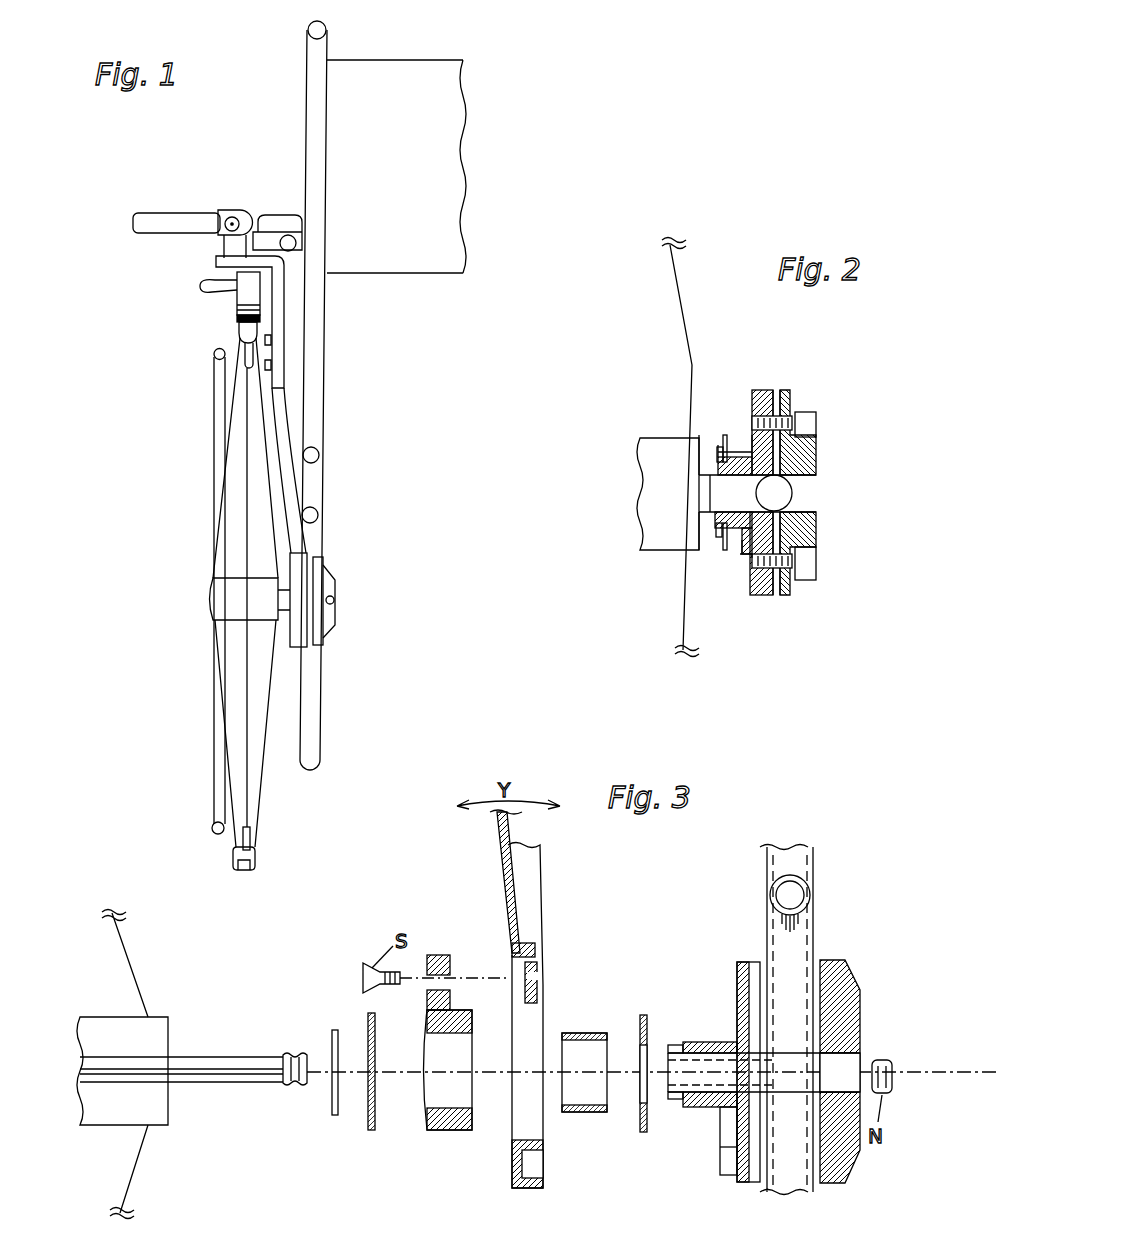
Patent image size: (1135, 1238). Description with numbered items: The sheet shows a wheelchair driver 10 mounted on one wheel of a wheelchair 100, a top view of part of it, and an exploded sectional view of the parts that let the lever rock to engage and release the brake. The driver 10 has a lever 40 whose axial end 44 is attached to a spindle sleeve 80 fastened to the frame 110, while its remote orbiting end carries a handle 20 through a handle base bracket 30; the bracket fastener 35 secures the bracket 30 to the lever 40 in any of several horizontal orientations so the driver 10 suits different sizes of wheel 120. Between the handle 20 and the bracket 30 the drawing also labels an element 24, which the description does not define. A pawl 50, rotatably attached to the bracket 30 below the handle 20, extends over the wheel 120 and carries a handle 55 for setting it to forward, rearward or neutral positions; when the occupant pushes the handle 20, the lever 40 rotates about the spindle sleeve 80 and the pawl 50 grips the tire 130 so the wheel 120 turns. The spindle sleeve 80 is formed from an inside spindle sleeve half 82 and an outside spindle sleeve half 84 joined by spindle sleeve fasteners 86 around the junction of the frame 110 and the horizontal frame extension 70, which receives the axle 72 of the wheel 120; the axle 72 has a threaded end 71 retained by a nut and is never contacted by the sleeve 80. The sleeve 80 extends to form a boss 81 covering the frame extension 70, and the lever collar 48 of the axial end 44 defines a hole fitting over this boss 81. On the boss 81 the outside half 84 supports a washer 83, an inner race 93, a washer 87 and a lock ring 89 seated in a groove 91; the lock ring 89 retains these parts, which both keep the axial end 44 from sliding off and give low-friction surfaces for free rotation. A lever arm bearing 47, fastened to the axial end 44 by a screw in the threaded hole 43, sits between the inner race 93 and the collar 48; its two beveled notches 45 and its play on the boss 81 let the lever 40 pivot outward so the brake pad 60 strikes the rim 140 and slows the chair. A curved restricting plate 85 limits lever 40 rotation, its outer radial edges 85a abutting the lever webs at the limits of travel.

In FIG. 1, the wheelchair driver 10 is at (260, 186).
In FIG. 1, the handle 20 is at (165, 220).
In FIG. 1, the pivot shaft 24 is at (236, 250).
In FIG. 1, the handle base bracket 30 is at (278, 315).
In FIG. 1, the bracket fastener 35 is at (270, 365).
In FIG. 1, the lever 40 is at (292, 543).
In FIG. 3, the lever 40 is at (527, 918).
In FIG. 3, the threaded hole 43 is at (533, 975).
In FIG. 3, the axial end 44 is at (531, 948).
In FIG. 3, the beveled notches 45 is at (437, 1012).
In FIG. 3, the lever arm bearing 47 is at (437, 1130).
In FIG. 3, the lever collar 48 is at (510, 1128).
In FIG. 1, the pawl 50 is at (245, 297).
In FIG. 1, the handle 55 is at (205, 285).
In FIG. 1, the brake pad 60 is at (270, 338).
In FIG. 3, the horizontal frame extension 70 is at (730, 1047).
In FIG. 3, the threaded end 71 is at (288, 1085).
In FIG. 1, the axle 72 is at (280, 598).
In FIG. 3, the axle 72 is at (205, 1060).
In FIG. 2, the spindle sleeve 80 is at (749, 351).
In FIG. 3, the boss 81 is at (700, 1043).
In FIG. 1, the inside spindle sleeve half 82 is at (318, 627).
In FIG. 2, the inside spindle sleeve half 82 is at (790, 597).
In FIG. 3, the inside spindle sleeve half 82 is at (845, 985).
In FIG. 2, the washer 83 is at (742, 440).
In FIG. 3, the washer 83 is at (645, 1135).
In FIG. 1, the outside spindle sleeve half 84 is at (306, 640).
In FIG. 2, the outside spindle sleeve half 84 is at (766, 392).
In FIG. 3, the outside spindle sleeve half 84 is at (748, 970).
In FIG. 2, the restricting plate 85 is at (745, 572).
In FIG. 3, the restricting plate 85 is at (723, 1128).
In FIG. 3, the outer radial edges 85a is at (728, 1160).
In FIG. 1, the spindle sleeve fasteners 86 is at (337, 598).
In FIG. 2, the spindle sleeve fasteners 86 is at (808, 420).
In FIG. 2, the washer 87 is at (725, 435).
In FIG. 3, the washer 87 is at (368, 1130).
In FIG. 2, the lock ring 89 is at (718, 448).
In FIG. 3, the lock ring 89 is at (333, 1113).
In FIG. 3, the groove 91 is at (676, 1045).
In FIG. 2, the inner race 93 is at (727, 545).
In FIG. 3, the inner race 93 is at (580, 1118).
In FIG. 1, the wheelchair 100 is at (459, 37).
In FIG. 1, the frame 110 is at (325, 45).
In FIG. 2, the frame 110 is at (778, 497).
In FIG. 3, the frame 110 is at (790, 950).
In FIG. 1, the wheel 120 is at (240, 325).
In FIG. 2, the wheel 120 is at (668, 518).
In FIG. 3, the wheel 120 is at (150, 1033).
In FIG. 1, the tire 130 is at (254, 862).
In FIG. 1, the rim 140 is at (245, 345).